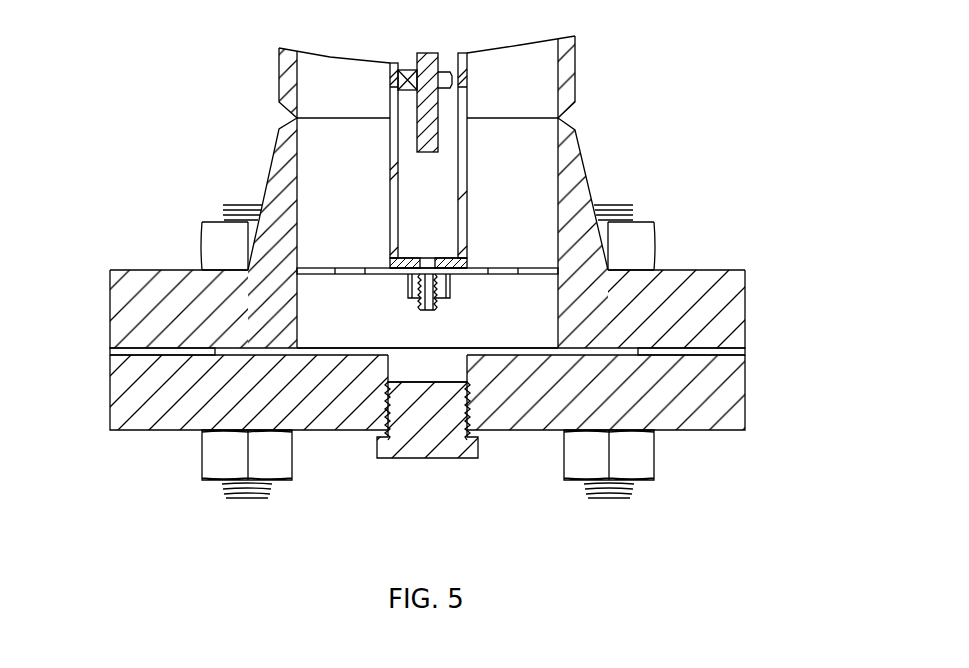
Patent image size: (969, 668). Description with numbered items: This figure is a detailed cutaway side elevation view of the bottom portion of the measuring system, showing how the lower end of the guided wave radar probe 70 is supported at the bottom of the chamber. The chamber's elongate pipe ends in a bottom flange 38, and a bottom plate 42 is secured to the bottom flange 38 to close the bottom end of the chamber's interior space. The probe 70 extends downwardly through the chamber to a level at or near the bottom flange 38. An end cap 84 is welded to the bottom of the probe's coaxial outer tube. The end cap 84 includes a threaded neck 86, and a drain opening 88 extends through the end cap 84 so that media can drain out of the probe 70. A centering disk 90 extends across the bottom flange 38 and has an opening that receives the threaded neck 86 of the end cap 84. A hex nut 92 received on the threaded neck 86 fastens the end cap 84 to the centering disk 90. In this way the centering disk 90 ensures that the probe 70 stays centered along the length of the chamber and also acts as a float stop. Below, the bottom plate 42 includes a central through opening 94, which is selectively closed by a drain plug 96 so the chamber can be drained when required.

The bottom flange 38 is at (730, 303).
The bottom plate 42 is at (725, 397).
The probe 70 is at (467, 202).
The end cap 84 is at (452, 262).
The threaded neck 86 is at (416, 301).
The drain opening 88 is at (430, 301).
The centering disk 90 is at (297, 281).
The hex nut 92 is at (411, 288).
The central through opening 94 is at (388, 370).
The drain plug 96 is at (426, 447).